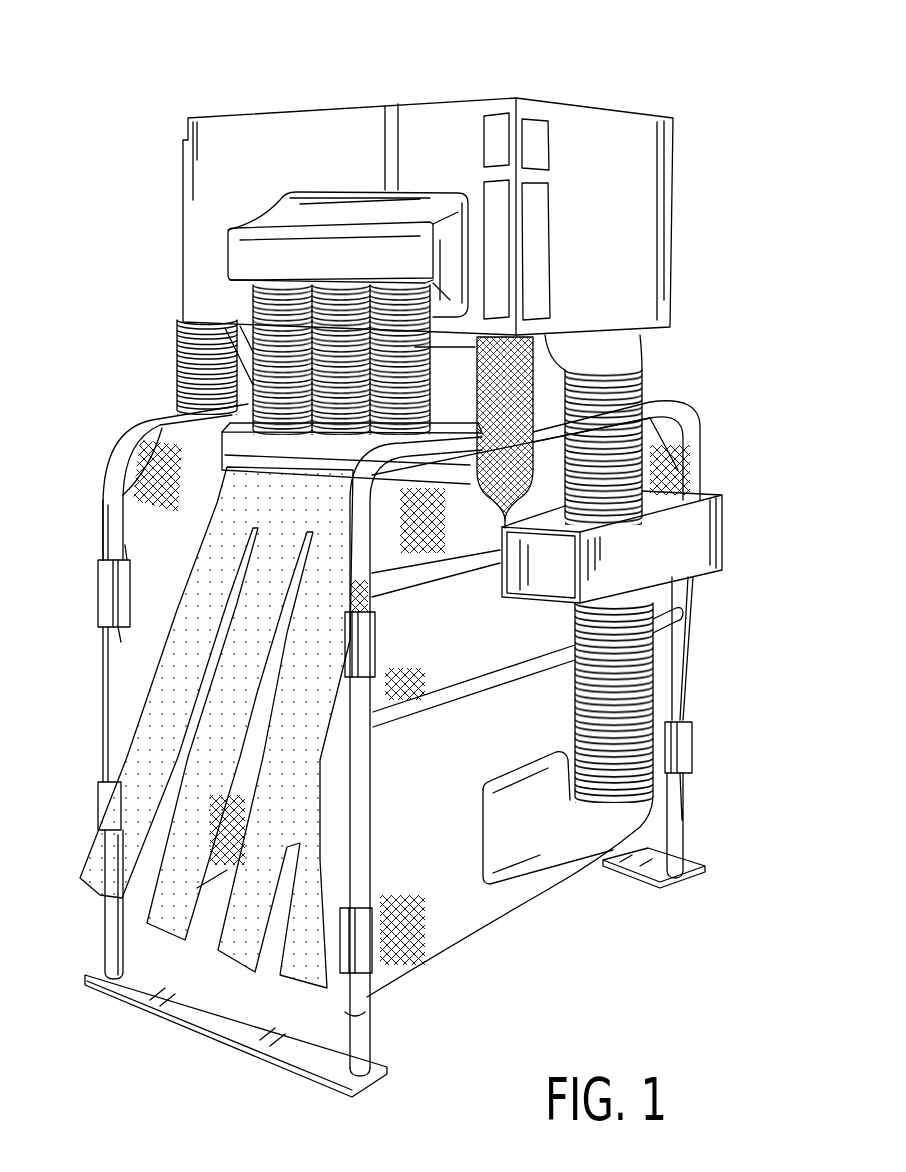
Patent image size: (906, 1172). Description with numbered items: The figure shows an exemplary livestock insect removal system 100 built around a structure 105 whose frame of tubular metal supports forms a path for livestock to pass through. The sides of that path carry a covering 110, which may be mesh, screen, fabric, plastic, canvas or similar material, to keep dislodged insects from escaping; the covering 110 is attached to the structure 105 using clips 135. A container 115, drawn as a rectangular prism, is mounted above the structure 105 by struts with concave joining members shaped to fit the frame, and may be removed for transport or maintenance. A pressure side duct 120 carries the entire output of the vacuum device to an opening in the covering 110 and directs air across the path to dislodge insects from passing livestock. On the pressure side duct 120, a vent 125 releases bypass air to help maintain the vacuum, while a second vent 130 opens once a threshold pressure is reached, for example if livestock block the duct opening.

The livestock insect removal system 100 is at (120, 63).
The structure 105 is at (133, 425).
The covering 110 is at (120, 522).
The container 115 is at (677, 206).
The pressure side duct 120 is at (645, 386).
The vent 125 is at (725, 527).
The second vent 130 is at (522, 583).
The clips 135 is at (105, 598).